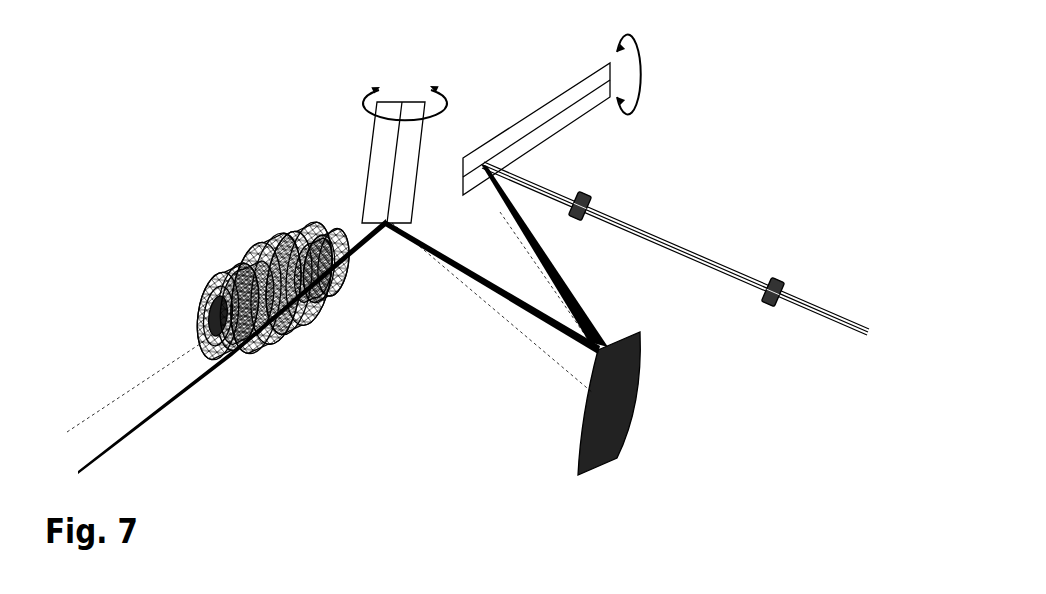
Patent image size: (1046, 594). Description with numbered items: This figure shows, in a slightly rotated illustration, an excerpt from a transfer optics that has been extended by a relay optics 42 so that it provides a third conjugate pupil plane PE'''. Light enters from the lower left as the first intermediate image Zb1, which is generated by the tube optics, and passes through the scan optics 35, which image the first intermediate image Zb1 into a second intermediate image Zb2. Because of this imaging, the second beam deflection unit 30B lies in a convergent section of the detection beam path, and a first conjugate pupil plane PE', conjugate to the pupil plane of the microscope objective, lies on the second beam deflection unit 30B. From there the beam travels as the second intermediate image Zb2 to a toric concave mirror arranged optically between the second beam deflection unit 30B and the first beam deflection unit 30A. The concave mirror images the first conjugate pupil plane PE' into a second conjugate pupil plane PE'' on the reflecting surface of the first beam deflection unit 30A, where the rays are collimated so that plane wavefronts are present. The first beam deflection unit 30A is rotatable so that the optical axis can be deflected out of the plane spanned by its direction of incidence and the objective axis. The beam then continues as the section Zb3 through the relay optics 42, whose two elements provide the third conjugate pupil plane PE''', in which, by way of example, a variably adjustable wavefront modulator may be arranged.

The first beam deflection unit 30A is at (533, 113).
The second beam deflection unit 30B is at (374, 123).
The scan optics 35 is at (237, 258).
The relay optics 42 is at (763, 305).
The first intermediate image Zb1 is at (77, 463).
The second intermediate image Zb2 is at (514, 303).
The third beam Zb3 is at (678, 247).
The first conjugate pupil plane PE' is at (308, 181).
The second conjugate pupil plane PE'' is at (476, 92).
The third conjugate pupil plane PE''' is at (841, 252).